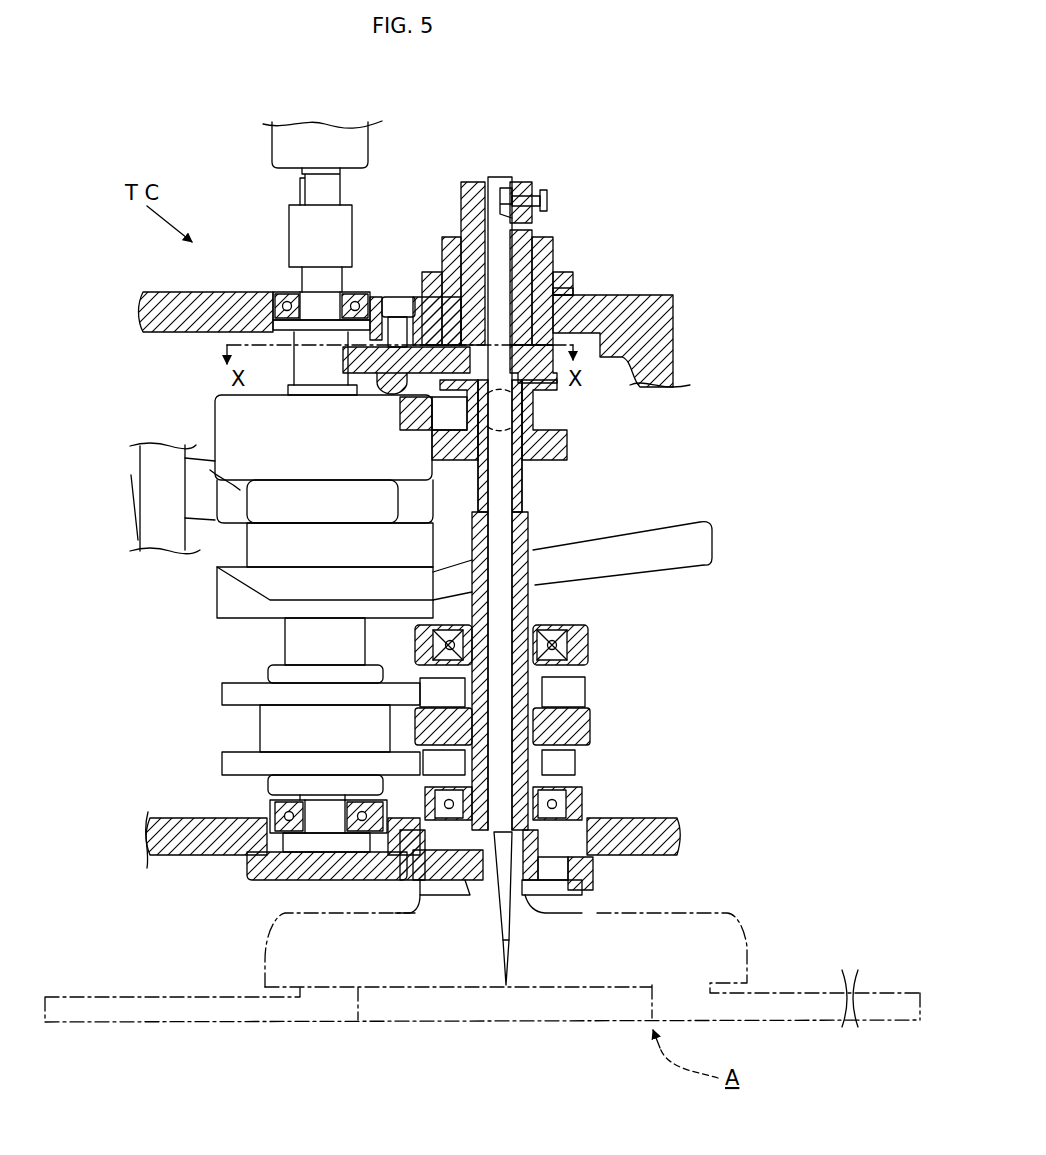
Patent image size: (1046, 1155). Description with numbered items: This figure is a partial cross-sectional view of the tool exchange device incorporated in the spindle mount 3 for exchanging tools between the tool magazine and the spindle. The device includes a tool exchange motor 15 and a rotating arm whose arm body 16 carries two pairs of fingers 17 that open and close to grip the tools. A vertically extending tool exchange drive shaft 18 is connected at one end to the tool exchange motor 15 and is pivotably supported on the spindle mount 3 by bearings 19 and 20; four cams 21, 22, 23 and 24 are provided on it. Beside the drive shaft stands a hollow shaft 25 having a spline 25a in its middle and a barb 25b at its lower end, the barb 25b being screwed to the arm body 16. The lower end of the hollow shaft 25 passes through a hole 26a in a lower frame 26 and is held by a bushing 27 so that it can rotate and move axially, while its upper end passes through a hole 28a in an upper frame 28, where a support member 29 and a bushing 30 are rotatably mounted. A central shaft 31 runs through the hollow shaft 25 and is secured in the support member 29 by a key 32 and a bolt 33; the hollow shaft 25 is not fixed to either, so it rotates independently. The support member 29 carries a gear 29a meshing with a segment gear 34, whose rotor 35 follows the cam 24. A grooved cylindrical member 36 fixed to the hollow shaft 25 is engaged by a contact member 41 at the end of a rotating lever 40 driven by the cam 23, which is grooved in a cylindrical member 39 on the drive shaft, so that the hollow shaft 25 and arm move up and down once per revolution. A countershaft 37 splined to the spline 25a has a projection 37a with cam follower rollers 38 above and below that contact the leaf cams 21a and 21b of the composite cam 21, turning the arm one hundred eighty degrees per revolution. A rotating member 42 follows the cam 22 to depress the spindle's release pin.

The spindle mount 3 is at (152, 819).
The tool exchange motor 15 is at (362, 137).
The arm body 16 is at (747, 946).
The fingers 17 is at (180, 1020).
The tool exchange drive shaft 18 is at (302, 286).
The bearing 19 is at (276, 292).
The bearing 20 is at (275, 806).
The cam 21 is at (252, 729).
The leaf cam 21a is at (222, 694).
The leaf cam 21b is at (280, 765).
The cam 22 is at (243, 538).
The cam 23 is at (217, 503).
The cam 24 is at (225, 392).
The hollow shaft 25 is at (532, 492).
The spline 25a is at (532, 530).
The barb 25b is at (565, 872).
The lower frame 26 is at (595, 868).
The hole 26a is at (520, 880).
The bushing 27 is at (590, 826).
The upper frame 28 is at (550, 252).
The hole 28a is at (573, 274).
The support member 29 is at (513, 181).
The gear 29a is at (567, 372).
The bushing 30 is at (533, 233).
The central shaft 31 is at (492, 176).
The key 32 is at (523, 187).
The bolt 33 is at (548, 200).
The segment gear 34 is at (332, 363).
The rotor 35 is at (400, 392).
The cylindrical member 36 is at (568, 446).
The countershaft 37 is at (540, 630).
The projection 37a is at (591, 733).
The cam follower rollers 38 is at (587, 692).
The cylindrical member 39 is at (240, 542).
The rotating lever 40 is at (200, 458).
The contact member 41 is at (530, 401).
The rotating member 42 is at (685, 524).